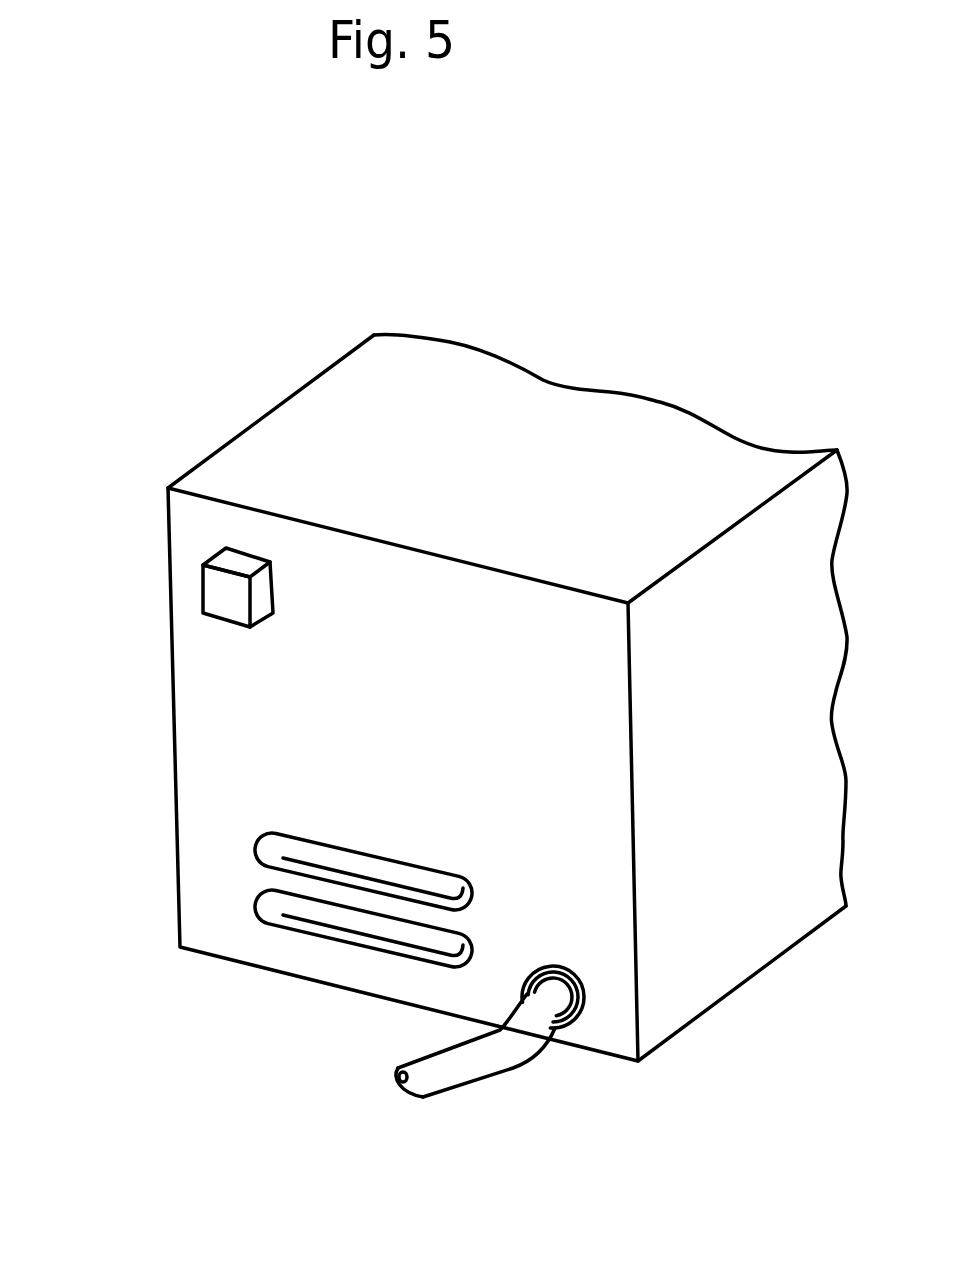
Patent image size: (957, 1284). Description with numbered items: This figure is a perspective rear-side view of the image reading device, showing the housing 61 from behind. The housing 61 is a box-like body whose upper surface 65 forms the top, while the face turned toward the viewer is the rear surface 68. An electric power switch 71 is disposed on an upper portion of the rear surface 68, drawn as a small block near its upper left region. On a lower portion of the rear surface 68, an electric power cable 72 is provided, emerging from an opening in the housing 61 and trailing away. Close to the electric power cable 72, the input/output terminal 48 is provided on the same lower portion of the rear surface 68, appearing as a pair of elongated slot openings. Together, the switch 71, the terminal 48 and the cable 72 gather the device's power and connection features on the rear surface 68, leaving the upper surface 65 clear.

The housing 61 is at (218, 422).
The upper surface 65 is at (338, 407).
The rear surface 68 is at (208, 723).
The electric power switch 71 is at (222, 594).
The input/output terminal 48 is at (283, 858).
The electric power cable 72 is at (450, 1068).